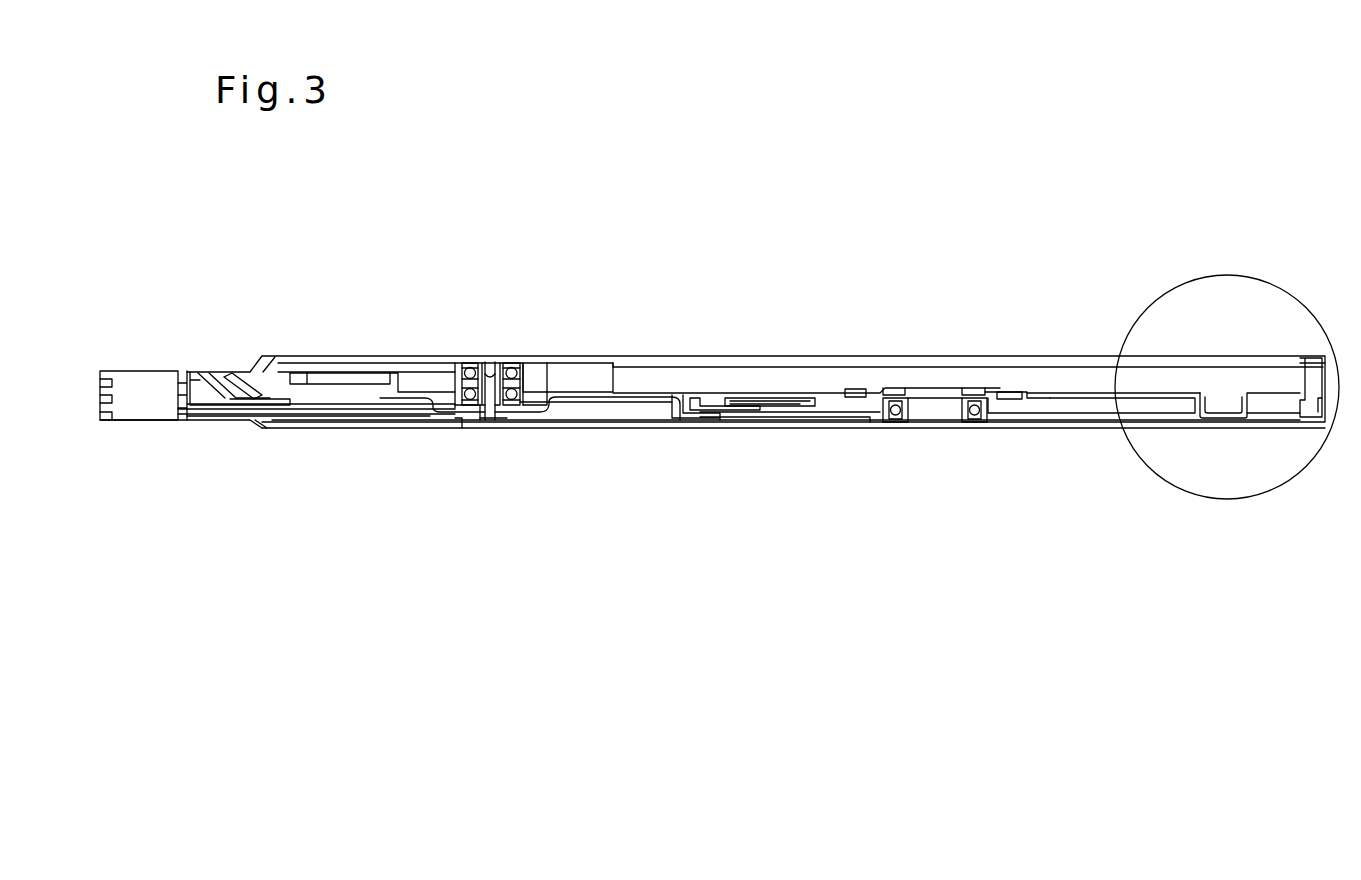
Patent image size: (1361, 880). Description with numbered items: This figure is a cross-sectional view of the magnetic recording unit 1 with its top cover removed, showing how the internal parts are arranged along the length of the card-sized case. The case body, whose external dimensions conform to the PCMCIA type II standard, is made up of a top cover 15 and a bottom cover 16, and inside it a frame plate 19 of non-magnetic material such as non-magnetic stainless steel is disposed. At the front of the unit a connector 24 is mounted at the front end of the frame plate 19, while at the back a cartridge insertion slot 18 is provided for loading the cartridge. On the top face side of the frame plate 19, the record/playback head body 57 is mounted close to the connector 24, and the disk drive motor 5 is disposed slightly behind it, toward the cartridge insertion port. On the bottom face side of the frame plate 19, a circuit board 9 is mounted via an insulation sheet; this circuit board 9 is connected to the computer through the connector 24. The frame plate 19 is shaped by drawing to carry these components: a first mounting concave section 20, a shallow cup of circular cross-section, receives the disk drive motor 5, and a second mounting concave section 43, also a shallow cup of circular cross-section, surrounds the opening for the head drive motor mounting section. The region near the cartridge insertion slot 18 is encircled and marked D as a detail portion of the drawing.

The magnetic recording unit 1 is at (810, 270).
The disk drive motor 5 is at (990, 384).
The circuit board 9 is at (212, 410).
The top cover 15 is at (373, 355).
The bottom cover 16 is at (360, 430).
The cartridge insertion slot 18 is at (1331, 394).
The frame plate 19 is at (1227, 392).
The first mounting concave section 20 is at (1030, 426).
The connector 24 is at (147, 373).
The second mounting concave section 43 is at (462, 428).
The record/playback head body 57 is at (545, 348).
The detail region D is at (1293, 280).